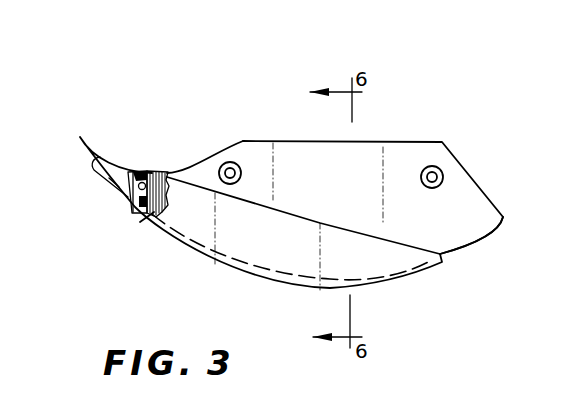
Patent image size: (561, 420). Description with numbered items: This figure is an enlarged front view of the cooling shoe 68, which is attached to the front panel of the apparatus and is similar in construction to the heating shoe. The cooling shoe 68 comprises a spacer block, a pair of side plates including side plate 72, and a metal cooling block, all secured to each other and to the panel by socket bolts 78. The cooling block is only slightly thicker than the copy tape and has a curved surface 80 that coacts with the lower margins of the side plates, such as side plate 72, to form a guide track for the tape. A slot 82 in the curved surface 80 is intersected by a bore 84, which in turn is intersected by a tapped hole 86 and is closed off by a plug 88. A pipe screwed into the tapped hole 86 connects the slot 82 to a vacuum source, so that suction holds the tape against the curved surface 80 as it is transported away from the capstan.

The cooling shoe 68 is at (417, 138).
The side plate 72 is at (228, 230).
The socket bolts 78 is at (241, 172).
The curved surface 80 is at (466, 242).
The slot 82 is at (139, 221).
The bore 84 is at (128, 197).
The tapped hole 86 is at (145, 200).
The plug 88 is at (141, 174).